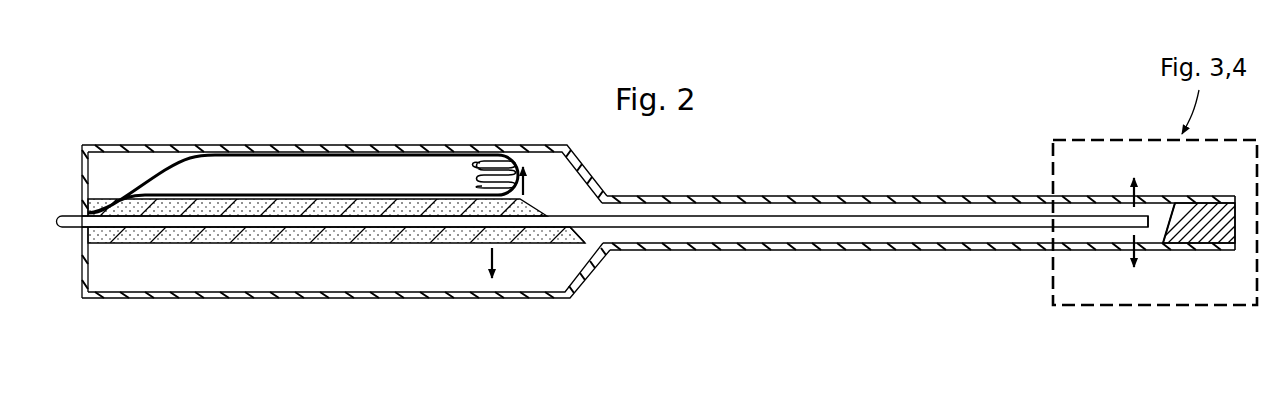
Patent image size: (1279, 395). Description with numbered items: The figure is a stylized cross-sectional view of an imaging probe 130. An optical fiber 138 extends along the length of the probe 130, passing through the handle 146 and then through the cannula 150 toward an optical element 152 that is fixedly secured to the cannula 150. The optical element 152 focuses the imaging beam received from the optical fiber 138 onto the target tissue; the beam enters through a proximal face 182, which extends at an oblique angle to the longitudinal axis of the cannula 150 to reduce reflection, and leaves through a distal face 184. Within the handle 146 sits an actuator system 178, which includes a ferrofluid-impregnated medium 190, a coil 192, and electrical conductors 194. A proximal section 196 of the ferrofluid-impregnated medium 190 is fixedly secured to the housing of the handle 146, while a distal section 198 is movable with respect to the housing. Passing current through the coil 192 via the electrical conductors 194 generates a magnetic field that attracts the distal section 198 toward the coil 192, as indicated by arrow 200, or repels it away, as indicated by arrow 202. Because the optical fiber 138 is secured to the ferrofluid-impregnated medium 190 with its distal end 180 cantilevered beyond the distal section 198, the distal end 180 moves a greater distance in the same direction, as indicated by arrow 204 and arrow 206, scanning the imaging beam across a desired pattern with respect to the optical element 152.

The probe 130 is at (811, 154).
The handle 146 is at (298, 145).
The optical fiber 138 is at (955, 216).
The cannula 150 is at (935, 251).
The optical element 152 is at (1203, 206).
The actuator system 178 is at (376, 262).
The distal end 180 is at (1167, 234).
The proximal face 182 is at (1172, 212).
The distal face 184 is at (1236, 235).
The ferrofluid-impregnated medium 190 is at (308, 243).
The coil 192 is at (470, 178).
The electrical conductors 194 is at (146, 168).
The proximal section 196 is at (101, 257).
The distal section 198 is at (538, 258).
The arrow 200 is at (528, 180).
The arrow 202 is at (490, 270).
The arrow 204 is at (1128, 192).
The arrow 206 is at (1128, 257).